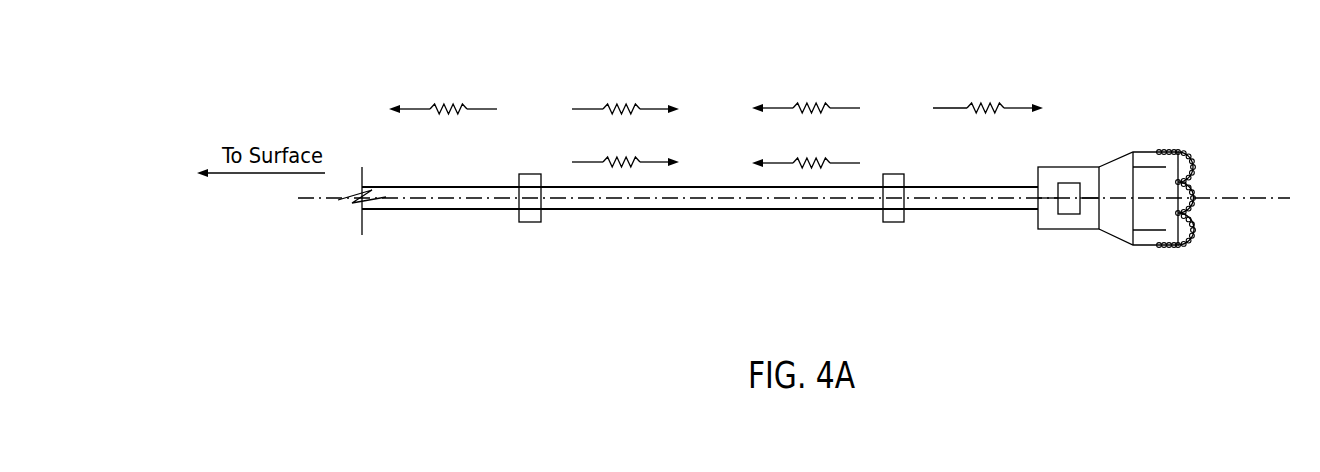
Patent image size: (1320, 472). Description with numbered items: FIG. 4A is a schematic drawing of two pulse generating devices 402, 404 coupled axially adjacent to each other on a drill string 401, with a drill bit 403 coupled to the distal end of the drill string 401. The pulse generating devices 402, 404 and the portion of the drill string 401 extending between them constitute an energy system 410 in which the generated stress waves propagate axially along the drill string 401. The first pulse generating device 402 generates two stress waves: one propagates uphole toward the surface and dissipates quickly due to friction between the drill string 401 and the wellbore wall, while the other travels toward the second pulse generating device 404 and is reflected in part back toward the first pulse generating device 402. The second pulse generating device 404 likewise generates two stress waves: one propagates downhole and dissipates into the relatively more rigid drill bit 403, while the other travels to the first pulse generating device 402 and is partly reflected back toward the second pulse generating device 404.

The drill string 401 is at (995, 209).
The first pulse generating device 402 is at (535, 222).
The drill bit 403 is at (1192, 172).
The second pulse generating device 404 is at (897, 222).
The energy system 410 is at (760, 48).